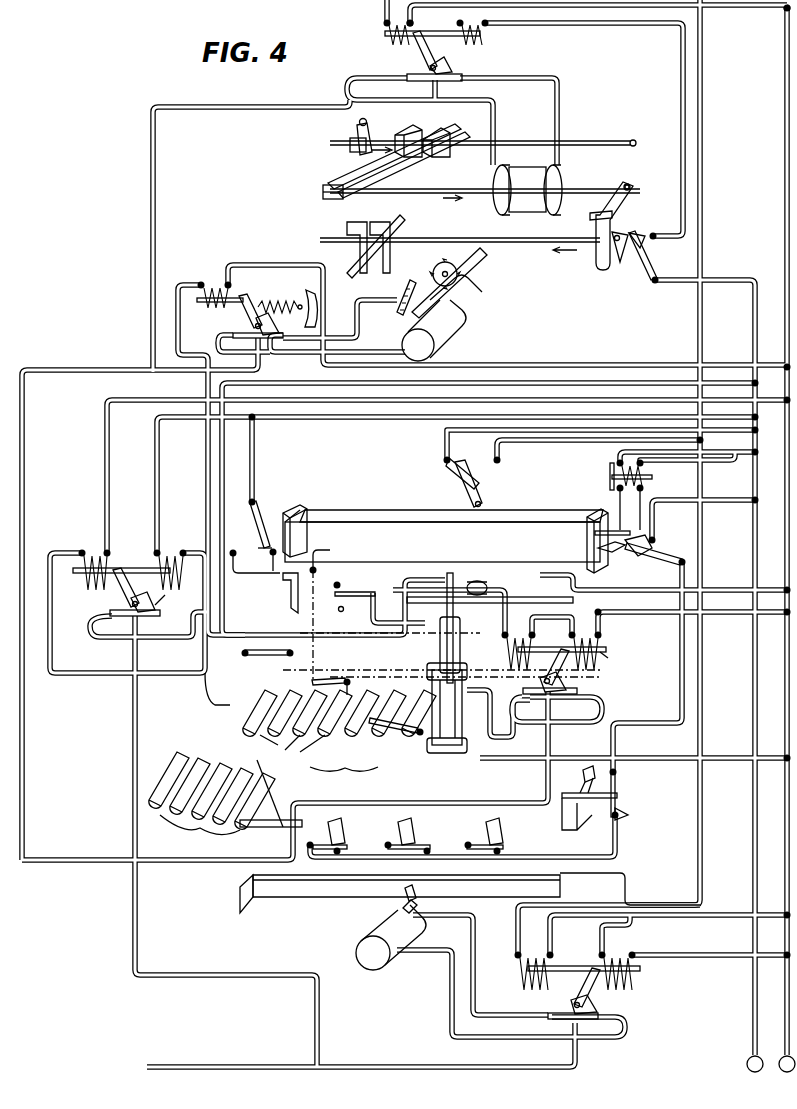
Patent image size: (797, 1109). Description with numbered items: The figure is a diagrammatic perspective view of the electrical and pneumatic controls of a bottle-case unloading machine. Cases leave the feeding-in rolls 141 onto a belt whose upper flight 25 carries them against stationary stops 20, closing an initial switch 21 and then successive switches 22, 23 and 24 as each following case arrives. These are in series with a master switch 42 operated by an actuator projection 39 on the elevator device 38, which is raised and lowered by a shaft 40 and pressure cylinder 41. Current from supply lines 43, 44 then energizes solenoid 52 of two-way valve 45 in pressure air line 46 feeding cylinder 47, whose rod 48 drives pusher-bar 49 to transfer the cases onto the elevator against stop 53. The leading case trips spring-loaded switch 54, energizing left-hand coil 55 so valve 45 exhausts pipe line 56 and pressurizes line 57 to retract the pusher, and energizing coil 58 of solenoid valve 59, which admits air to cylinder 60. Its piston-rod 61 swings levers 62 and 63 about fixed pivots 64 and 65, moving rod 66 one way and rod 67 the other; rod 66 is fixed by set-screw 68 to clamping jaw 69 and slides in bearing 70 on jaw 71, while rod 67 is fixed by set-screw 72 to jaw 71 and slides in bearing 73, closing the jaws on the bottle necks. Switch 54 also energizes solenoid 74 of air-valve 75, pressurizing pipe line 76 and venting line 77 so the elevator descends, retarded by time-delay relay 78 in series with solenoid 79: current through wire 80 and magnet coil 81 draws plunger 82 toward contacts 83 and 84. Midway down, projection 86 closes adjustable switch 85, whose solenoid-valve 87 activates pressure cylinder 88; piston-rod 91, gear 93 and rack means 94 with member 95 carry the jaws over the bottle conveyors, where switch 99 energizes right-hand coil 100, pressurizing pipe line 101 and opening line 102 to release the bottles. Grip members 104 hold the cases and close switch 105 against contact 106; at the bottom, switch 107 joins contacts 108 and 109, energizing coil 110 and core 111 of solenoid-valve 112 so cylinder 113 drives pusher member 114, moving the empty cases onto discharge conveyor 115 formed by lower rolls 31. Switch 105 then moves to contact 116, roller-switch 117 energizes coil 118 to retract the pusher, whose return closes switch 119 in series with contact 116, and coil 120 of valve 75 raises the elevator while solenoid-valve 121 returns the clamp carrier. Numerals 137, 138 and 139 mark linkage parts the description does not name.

The stationary stops 20 is at (593, 765).
The initial electric switch 21 is at (628, 778).
The successive switch 22 is at (498, 812).
The successive switch 23 is at (423, 812).
The successive switch 24 is at (333, 812).
The upper flight of the endless belt 25 is at (309, 786).
The belt driven rolls 31 is at (339, 727).
The elevator device 38 is at (442, 536).
The actuator projection 39 is at (615, 552).
The shaft 40 is at (444, 648).
The pressure cylinder 41 is at (447, 708).
The master or controlling switch 42 is at (662, 548).
The current supply line 43 is at (752, 690).
The current supply line 44 is at (786, 688).
The two-way solenoid-operated valve 45 is at (606, 1002).
The pressure air line 46 is at (447, 1070).
The cylinder 47 is at (376, 970).
The piston rod 48 is at (415, 910).
The pusher-bar 49 is at (343, 895).
The solenoid 52 is at (560, 950).
The stop 53 is at (398, 508).
The spring-loaded switch 54 is at (452, 490).
The solenoid left-hand coil 55 is at (530, 982).
The pipe line 56 is at (447, 990).
The pipe line 57 is at (473, 967).
The coil 58 is at (383, 46).
The solenoid valve 59 is at (445, 20).
The cylinder 60 is at (527, 190).
The piston-rod 61 is at (461, 186).
The lever 62 is at (338, 160).
The lever 63 is at (622, 199).
The fixed pivot 64 is at (354, 123).
The fixed pivot 65 is at (623, 216).
The rod 66 is at (597, 138).
The rod 67 is at (533, 246).
The set-screw 68 is at (410, 133).
The clamping jaw 69 is at (392, 168).
The bearing 70 is at (447, 130).
The clamping jaw 71 is at (405, 215).
The set-screw 72 is at (395, 230).
The bearing 73 is at (350, 230).
The solenoid 74 is at (570, 641).
The air-valve 75 is at (570, 682).
The pipe line 76 is at (596, 712).
The pipe line 77 is at (505, 740).
The time-delay relay 78 is at (575, 480).
The solenoid 79 is at (610, 656).
The wire 80 is at (730, 466).
The magnet coil 81 is at (650, 482).
The plunger 82 is at (603, 467).
The contact 83 is at (637, 465).
The contact 84 is at (616, 486).
The adjustable switch 85 is at (270, 645).
The projection 86 is at (290, 599).
The solenoid-valve 87 is at (212, 280).
The pressure cylinder 88 is at (433, 348).
The piston-rod 91 is at (466, 298).
The gear 93 is at (478, 268).
The rack means 94 is at (446, 266).
The member 95 is at (408, 287).
The switch 99 is at (653, 255).
The right-hand coil 100 is at (485, 38).
The pipe line 101 is at (498, 108).
The pipe line 102 is at (560, 95).
The spring-influenced grip member 104 is at (297, 512).
The switch 105 is at (265, 510).
The contact 106 is at (233, 547).
The switch 107 is at (328, 676).
The contact 108 is at (320, 548).
The contact 109 is at (350, 676).
The coil 110 is at (88, 552).
The core 111 is at (128, 554).
The solenoid-valve 112 is at (166, 598).
The pressure-air cylinder 113 is at (491, 586).
The pusher member 114 is at (528, 604).
The case discharge conveyor 115 is at (235, 712).
The contact 116 is at (272, 572).
The roller-switch 117 is at (392, 736).
The coil 118 is at (175, 552).
The switch 119 is at (352, 577).
The coil 120 is at (278, 304).
The solenoid-valve 121 is at (245, 320).
The block 137 is at (323, 185).
The block 138 is at (345, 145).
The pin 139 is at (622, 189).
The feeding-in rolls 141 is at (216, 802).